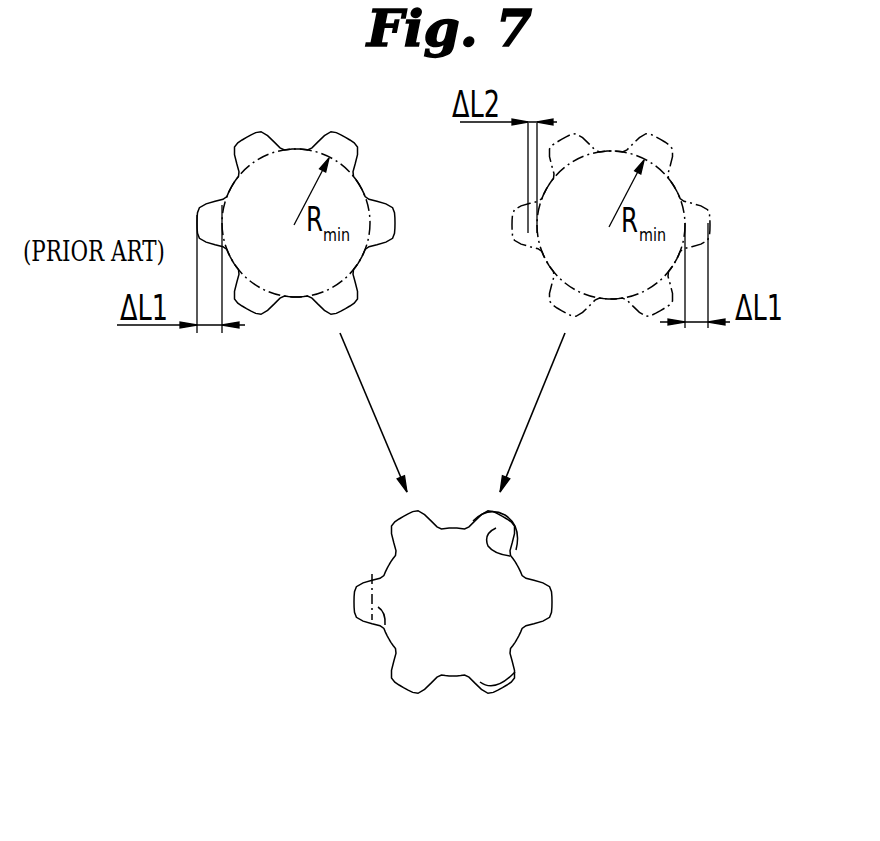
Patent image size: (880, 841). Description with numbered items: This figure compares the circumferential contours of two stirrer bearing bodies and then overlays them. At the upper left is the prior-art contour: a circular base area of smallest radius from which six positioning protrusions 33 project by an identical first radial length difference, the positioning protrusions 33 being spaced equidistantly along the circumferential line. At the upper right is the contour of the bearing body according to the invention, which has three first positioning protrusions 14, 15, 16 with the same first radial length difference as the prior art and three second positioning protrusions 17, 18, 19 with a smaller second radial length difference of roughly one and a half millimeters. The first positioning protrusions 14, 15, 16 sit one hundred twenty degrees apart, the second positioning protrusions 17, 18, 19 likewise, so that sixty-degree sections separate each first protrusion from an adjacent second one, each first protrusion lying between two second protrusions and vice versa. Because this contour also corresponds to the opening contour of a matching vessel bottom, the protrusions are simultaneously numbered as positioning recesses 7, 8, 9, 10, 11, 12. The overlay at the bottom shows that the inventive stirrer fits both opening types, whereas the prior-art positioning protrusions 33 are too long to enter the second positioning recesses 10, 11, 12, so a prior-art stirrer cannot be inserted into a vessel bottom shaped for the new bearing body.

The positioning protrusion 33 is at (205, 212).
The positioning recess 7 is at (565, 302).
The positioning recess 8 is at (697, 225).
The positioning recess 9 is at (573, 142).
The second positioning recess 10 is at (635, 300).
The second positioning recess 11 is at (648, 158).
The second positioning recess 12 is at (528, 232).
The first positioning protrusion 14 is at (547, 313).
The first positioning protrusion 15 is at (736, 225).
The first positioning protrusion 16 is at (600, 131).
The second positioning protrusion 17 is at (560, 477).
The second positioning protrusion 18 is at (608, 347).
The second positioning protrusion 19 is at (422, 471).